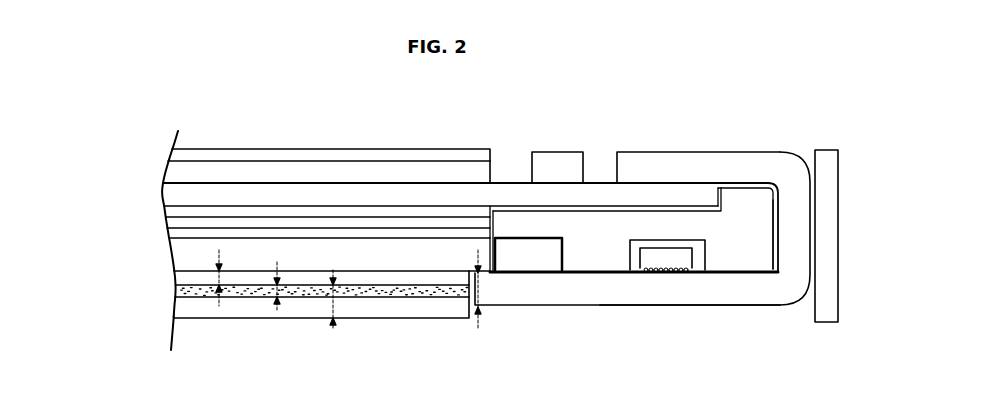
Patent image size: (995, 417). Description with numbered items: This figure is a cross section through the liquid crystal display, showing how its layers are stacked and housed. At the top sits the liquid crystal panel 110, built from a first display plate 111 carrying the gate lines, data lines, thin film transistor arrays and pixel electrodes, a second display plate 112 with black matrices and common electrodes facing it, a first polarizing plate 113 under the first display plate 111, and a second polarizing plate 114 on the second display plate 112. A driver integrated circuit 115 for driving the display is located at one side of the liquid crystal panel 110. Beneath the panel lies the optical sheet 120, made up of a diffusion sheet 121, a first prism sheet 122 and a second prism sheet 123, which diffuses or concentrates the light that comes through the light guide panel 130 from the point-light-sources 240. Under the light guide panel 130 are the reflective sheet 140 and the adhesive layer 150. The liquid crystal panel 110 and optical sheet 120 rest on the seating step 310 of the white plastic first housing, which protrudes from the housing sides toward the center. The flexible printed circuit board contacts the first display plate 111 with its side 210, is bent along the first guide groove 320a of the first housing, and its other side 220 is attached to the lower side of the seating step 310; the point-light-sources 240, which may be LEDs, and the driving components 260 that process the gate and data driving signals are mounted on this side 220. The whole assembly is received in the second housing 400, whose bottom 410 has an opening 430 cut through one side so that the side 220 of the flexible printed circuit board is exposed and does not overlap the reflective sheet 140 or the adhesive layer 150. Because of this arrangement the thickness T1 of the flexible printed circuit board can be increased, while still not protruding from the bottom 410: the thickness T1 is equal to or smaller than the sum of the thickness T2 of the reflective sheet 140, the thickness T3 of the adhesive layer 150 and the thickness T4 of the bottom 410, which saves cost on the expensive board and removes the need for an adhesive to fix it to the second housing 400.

The liquid crystal panel 110 is at (82, 210).
The second polarizing plate 114 is at (170, 150).
The second display plate 112 is at (167, 171).
The first display plate 111 is at (167, 195).
The first polarizing plate 113 is at (167, 212).
The optical sheet 120 is at (82, 224).
The second prism sheet 123 is at (168, 217).
The first prism sheet 122 is at (171, 235).
The diffusion sheet 121 is at (176, 260).
The light guide panel 130 is at (178, 277).
The reflective sheet 140 is at (175, 292).
The adhesive layer 150 is at (173, 317).
The bottom 410 is at (402, 308).
The thickness of the flexible printed circuit board T1 is at (491, 300).
The thickness of the reflective sheet T2 is at (237, 300).
The thickness of the adhesive layer T3 is at (291, 300).
The thickness of the bottom T4 is at (336, 306).
The driver integrated circuit 115 is at (560, 165).
The side of the flexible printed circuit board 210 is at (730, 177).
The second housing 400 is at (827, 158).
The seating step 310 is at (600, 230).
The first guide groove 320a is at (750, 265).
The point-light-sources 240 is at (528, 275).
The driving components 260 is at (662, 262).
The other side of the flexible printed circuit board 220 is at (713, 297).
The opening 430 is at (663, 312).